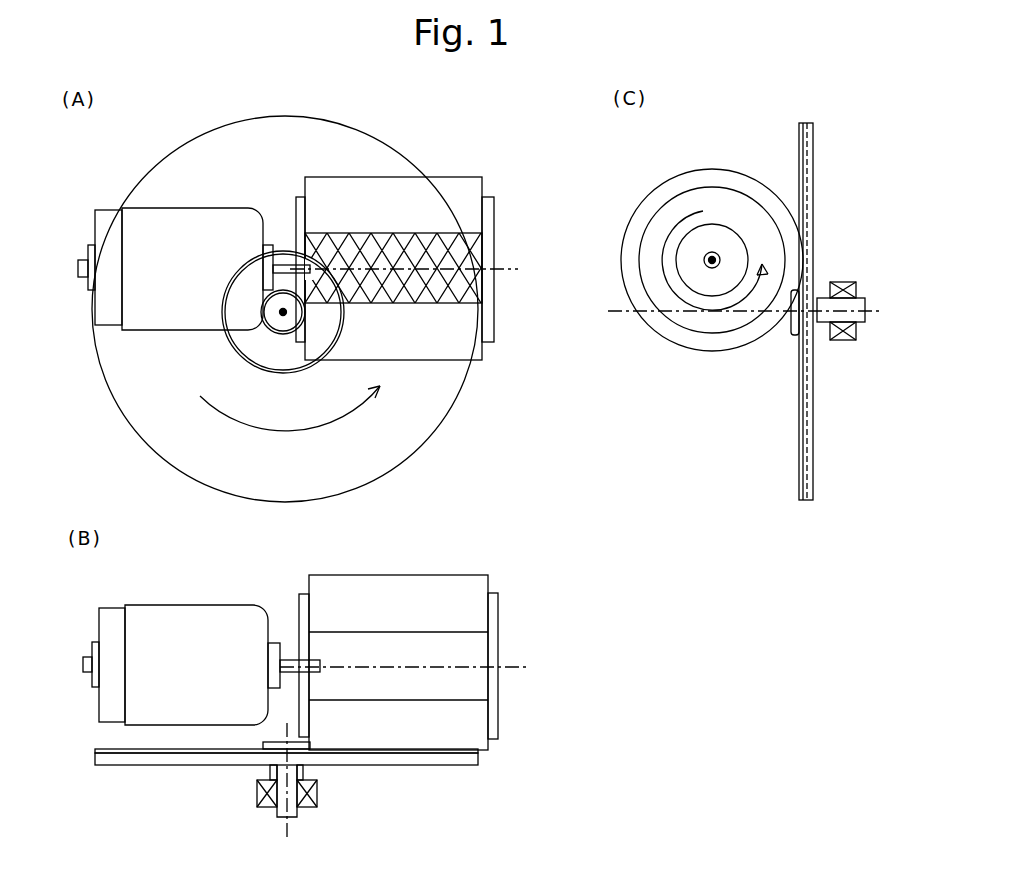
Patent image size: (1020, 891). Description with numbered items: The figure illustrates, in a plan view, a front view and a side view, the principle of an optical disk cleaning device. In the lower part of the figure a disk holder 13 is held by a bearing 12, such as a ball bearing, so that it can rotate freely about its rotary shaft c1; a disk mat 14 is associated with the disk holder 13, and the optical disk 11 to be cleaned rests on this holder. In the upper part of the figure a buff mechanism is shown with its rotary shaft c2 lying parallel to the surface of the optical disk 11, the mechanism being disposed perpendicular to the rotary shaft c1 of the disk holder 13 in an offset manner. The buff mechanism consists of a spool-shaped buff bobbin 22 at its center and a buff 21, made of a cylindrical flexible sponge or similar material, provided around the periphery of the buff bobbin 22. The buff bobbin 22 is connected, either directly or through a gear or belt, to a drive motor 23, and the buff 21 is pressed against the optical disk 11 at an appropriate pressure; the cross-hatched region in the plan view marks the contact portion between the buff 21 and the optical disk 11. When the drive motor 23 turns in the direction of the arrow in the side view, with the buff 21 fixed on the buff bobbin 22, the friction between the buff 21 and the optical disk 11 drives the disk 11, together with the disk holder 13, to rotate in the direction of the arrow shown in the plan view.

The optical disk to be cleaned 11 is at (360, 162).
The bearing 12 is at (260, 805).
The disk holder 13 is at (207, 760).
The disk mat 14 is at (122, 757).
The buff 21 is at (455, 185).
The buff bobbin 22 is at (488, 213).
The drive motor 23 is at (218, 218).
The rotary shaft of the disk holder c1 is at (283, 312).
The rotary shaft of the buff mechanism c2 is at (753, 178).